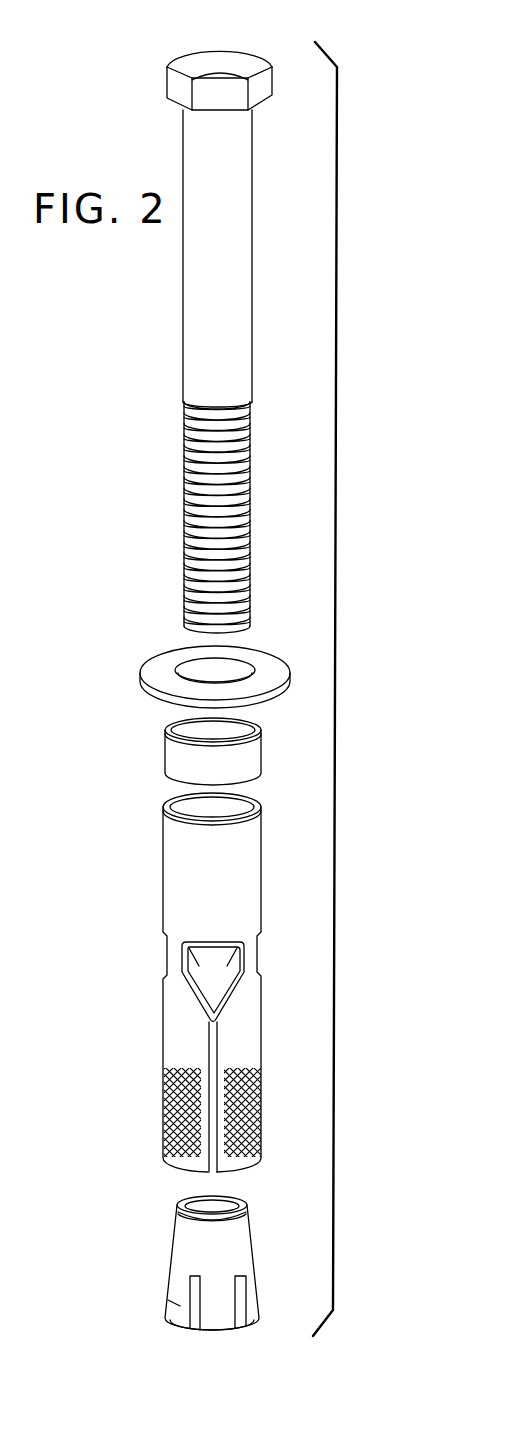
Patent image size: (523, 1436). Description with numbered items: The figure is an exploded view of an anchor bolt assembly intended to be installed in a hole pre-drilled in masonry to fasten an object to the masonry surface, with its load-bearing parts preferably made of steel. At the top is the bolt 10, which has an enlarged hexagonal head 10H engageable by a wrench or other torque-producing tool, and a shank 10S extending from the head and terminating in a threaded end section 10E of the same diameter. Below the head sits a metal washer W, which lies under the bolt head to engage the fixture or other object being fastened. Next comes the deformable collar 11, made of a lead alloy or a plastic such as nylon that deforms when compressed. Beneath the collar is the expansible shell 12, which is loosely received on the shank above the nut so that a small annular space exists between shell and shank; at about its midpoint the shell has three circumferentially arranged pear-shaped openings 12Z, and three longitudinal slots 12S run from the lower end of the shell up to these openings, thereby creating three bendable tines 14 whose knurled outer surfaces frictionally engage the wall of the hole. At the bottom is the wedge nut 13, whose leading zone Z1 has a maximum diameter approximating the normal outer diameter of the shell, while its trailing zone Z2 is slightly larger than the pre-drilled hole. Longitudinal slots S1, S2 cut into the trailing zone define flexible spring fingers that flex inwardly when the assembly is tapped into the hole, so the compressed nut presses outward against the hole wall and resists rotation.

The bolt 10 is at (181, 394).
The hexagonal head 10H is at (193, 57).
The shank 10S is at (252, 390).
The threaded end section 10E is at (183, 543).
The washer W is at (140, 679).
The deformable collar 11 is at (172, 752).
The expansible shell 12 is at (160, 862).
The pear-shaped openings 12Z is at (203, 970).
The longitudinal slots 12S is at (208, 1050).
The bendable tines 14 is at (163, 1122).
The wedge nut 13 is at (170, 1238).
The leading zone Z1 is at (243, 1233).
The trailing zone Z2 is at (250, 1270).
The longitudinal slot S1 is at (196, 1300).
The longitudinal slot S2 is at (242, 1298).